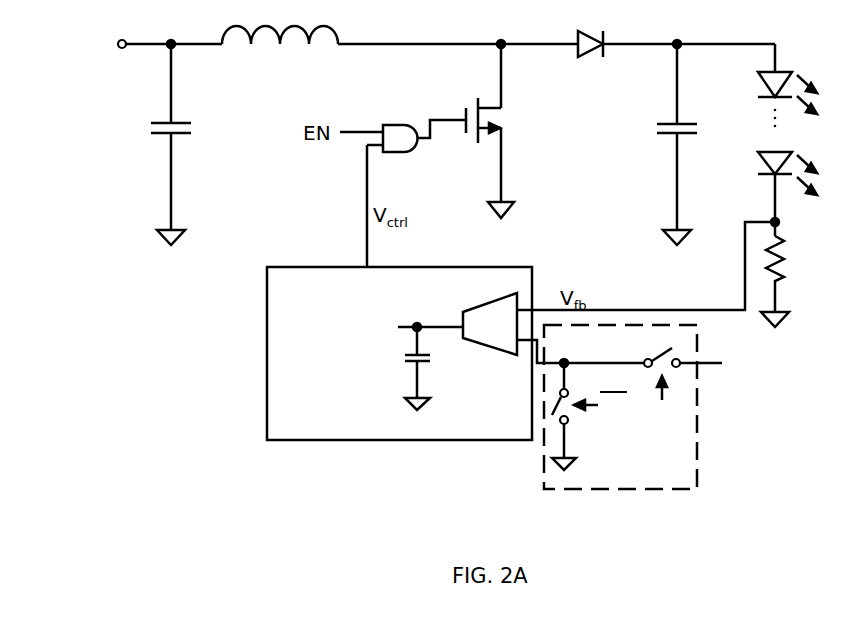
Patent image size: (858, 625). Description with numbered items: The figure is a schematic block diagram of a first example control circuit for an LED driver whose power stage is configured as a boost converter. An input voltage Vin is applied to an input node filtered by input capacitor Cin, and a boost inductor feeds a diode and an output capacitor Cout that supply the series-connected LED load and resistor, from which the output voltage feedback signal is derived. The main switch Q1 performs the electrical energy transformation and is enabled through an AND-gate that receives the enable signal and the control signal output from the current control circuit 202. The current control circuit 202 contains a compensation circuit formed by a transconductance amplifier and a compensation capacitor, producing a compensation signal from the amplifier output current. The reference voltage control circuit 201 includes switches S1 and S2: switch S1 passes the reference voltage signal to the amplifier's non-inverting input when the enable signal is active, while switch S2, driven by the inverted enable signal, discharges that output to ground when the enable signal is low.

The reference voltage control circuit 201 is at (653, 407).
The current control circuit 202 is at (332, 429).
The main switch Q1 is at (501, 131).
The switch S1 is at (652, 350).
The switch S2 is at (571, 416).
The input capacitor Cin is at (154, 144).
The output capacitor Cout is at (661, 144).
The input voltage terminal Vin is at (101, 47).